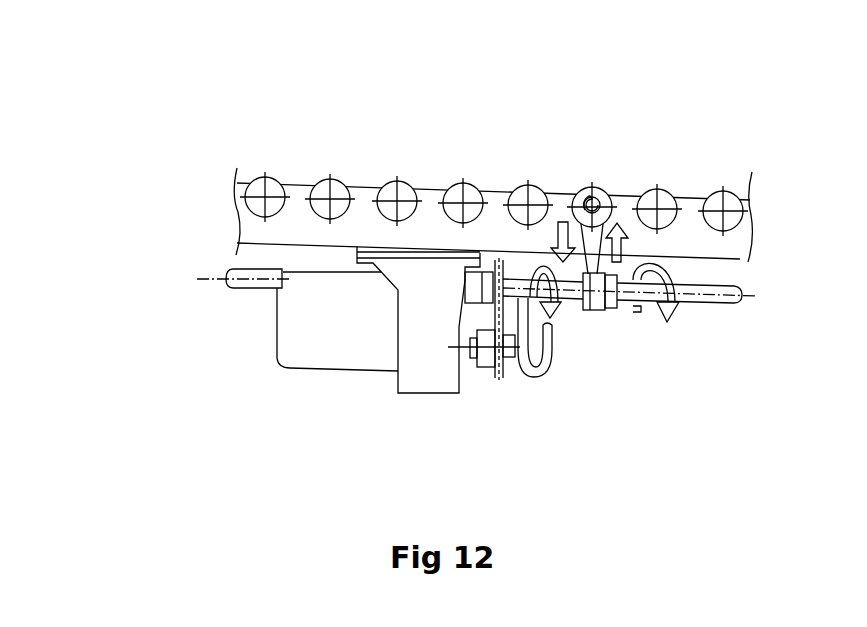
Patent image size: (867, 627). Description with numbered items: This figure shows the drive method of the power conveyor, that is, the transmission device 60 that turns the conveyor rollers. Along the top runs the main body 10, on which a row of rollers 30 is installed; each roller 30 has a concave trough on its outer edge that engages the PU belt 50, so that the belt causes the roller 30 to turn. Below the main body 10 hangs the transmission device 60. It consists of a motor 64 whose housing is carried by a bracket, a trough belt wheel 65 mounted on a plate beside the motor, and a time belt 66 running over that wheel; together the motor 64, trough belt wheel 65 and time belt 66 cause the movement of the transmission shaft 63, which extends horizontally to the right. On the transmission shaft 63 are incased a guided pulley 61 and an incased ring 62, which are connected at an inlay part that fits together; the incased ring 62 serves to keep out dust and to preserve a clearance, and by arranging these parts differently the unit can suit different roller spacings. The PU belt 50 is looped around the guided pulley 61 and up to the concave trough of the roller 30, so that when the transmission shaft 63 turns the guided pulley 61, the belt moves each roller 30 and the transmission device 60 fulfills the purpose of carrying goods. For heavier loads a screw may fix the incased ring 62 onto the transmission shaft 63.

The main body 10 is at (495, 190).
The roller 30 is at (602, 188).
The PU belt 50 is at (586, 310).
The transmission device 60 is at (180, 268).
The guided pulley 61 is at (597, 313).
The incased ring 62 is at (608, 313).
The transmission shaft 63 is at (690, 307).
The motor 64 is at (335, 372).
The trough belt wheel 65 is at (480, 373).
The time belt 66 is at (495, 378).